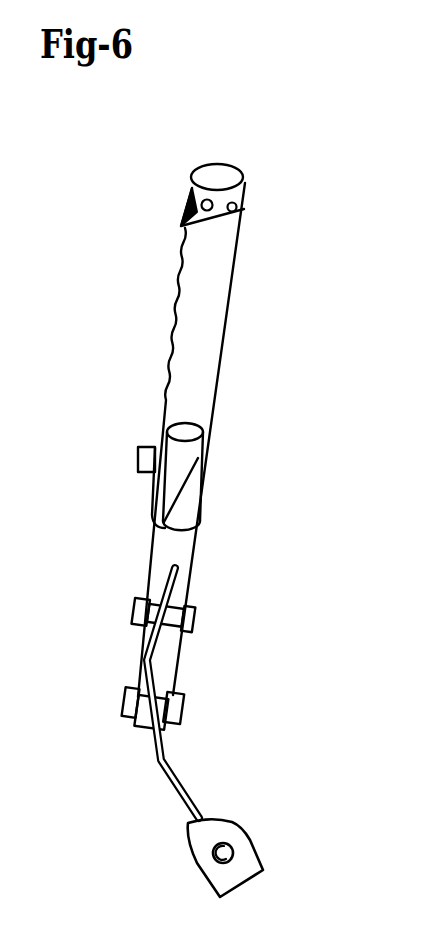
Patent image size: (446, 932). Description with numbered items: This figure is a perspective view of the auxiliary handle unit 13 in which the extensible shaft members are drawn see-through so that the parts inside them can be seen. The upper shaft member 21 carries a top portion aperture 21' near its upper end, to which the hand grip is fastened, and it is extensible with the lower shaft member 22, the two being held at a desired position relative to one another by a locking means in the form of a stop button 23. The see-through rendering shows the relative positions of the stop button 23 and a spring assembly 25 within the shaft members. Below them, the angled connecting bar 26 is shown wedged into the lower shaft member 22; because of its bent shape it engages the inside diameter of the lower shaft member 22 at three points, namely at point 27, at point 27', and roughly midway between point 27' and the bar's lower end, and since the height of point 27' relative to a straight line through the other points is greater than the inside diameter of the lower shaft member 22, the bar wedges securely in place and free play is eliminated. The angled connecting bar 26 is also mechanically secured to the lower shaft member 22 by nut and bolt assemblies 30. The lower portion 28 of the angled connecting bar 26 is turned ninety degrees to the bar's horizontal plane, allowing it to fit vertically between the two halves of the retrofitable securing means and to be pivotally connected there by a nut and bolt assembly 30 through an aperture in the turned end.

The auxiliary handle unit 13 is at (332, 435).
The upper shaft member 21 is at (219, 430).
The top portion aperture 21' is at (176, 195).
The lower shaft member 22 is at (192, 580).
The stop button 23 is at (125, 462).
The spring assembly 25 is at (190, 500).
The angled connecting bar 26 is at (178, 778).
The engagement point 27 is at (133, 685).
The engagement point 27' is at (97, 664).
The lower turned portion 28 is at (178, 827).
The nut and bolt assembly 30 is at (185, 712).